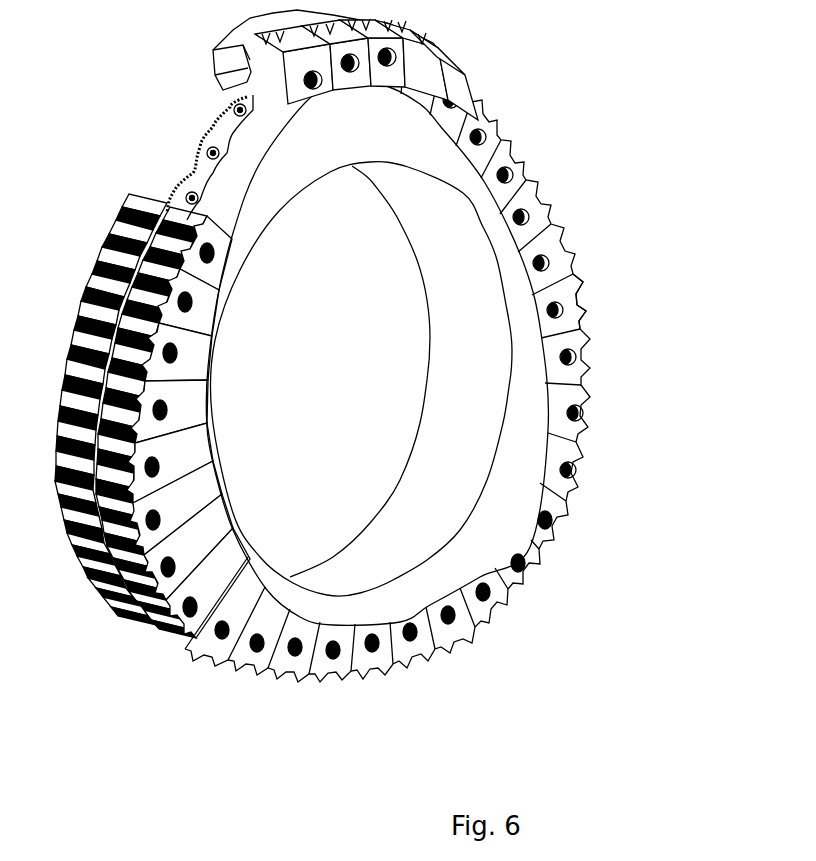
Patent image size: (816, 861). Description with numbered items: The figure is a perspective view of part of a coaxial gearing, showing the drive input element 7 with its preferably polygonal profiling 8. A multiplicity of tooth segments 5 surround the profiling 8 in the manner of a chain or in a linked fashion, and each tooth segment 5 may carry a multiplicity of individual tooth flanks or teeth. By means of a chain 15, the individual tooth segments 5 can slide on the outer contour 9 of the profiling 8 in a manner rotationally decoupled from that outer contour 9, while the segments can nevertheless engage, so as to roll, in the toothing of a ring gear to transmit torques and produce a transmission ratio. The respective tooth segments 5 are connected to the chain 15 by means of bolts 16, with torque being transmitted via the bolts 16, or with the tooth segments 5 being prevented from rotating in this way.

The chain 15 is at (188, 134).
The tooth segments 5 is at (93, 248).
The outer contour 9 is at (237, 184).
The bolts 16 is at (351, 66).
The drive input element 7 is at (429, 352).
The profiling 8 is at (404, 129).